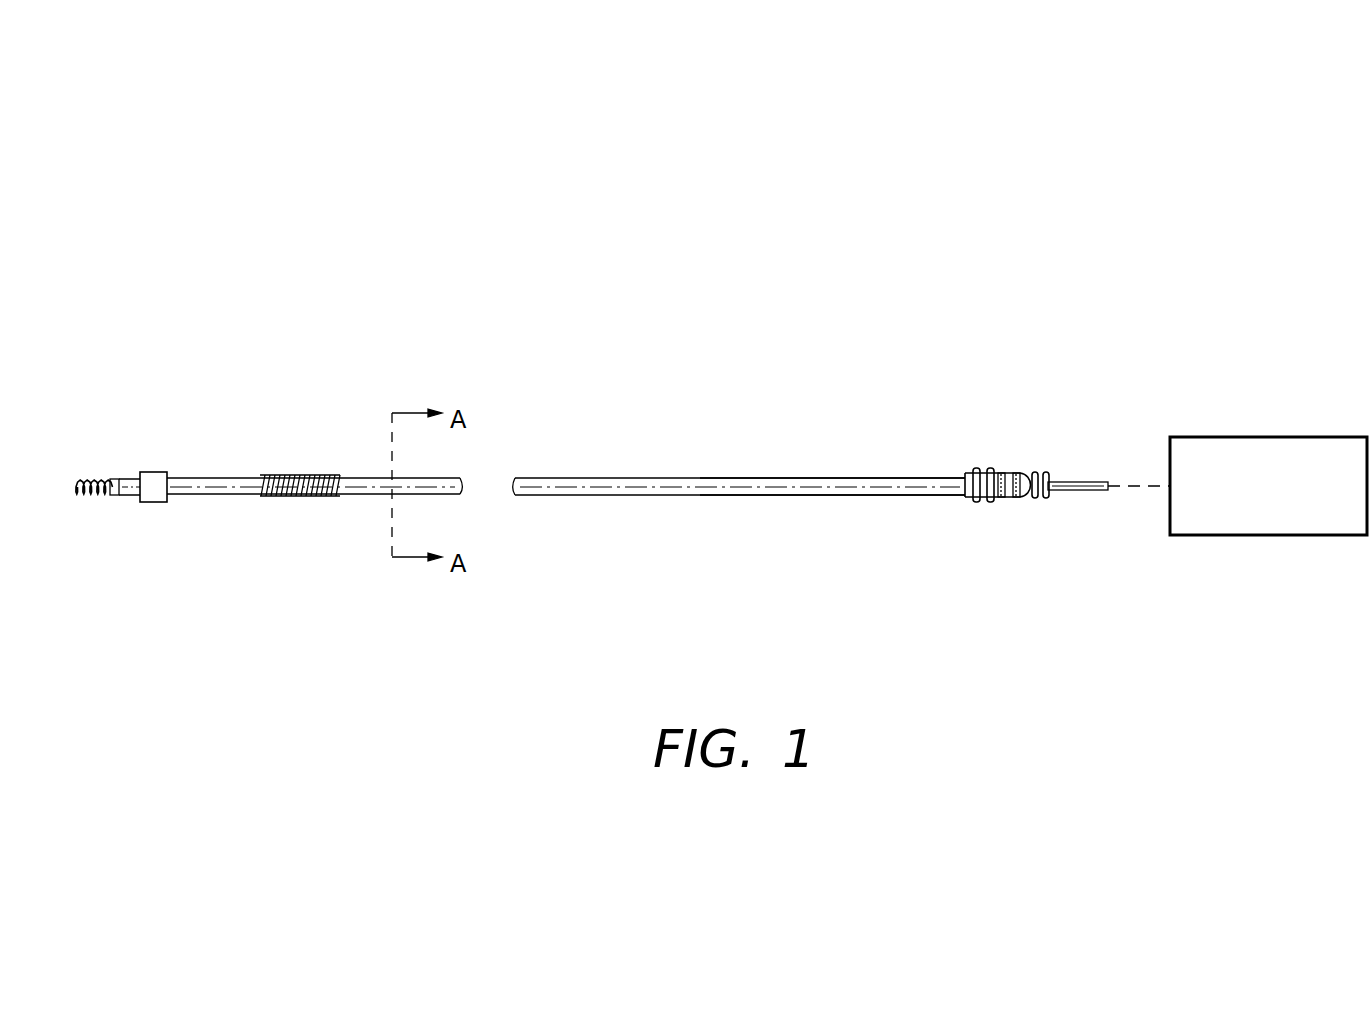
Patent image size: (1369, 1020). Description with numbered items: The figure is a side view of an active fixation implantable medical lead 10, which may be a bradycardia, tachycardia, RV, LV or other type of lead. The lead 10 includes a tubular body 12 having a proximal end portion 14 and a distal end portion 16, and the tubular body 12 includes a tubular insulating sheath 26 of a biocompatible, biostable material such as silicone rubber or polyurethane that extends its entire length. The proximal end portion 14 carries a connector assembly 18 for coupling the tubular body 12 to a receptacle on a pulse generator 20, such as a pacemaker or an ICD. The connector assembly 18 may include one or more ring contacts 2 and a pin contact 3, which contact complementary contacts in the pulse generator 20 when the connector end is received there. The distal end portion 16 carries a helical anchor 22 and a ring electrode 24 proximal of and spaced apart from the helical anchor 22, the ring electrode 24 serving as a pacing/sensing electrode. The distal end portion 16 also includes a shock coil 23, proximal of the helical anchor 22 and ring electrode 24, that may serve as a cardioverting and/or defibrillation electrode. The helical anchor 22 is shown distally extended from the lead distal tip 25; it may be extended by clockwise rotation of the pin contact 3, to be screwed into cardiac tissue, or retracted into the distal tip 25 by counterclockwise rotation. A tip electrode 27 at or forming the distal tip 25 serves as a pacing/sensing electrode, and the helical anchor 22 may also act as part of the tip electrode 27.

The active fixation implantable medical lead 10 is at (617, 228).
The tubular body 12 is at (673, 446).
The proximal end portion 14 is at (925, 475).
The distal end portion 16 is at (215, 478).
The connector assembly 18 is at (1010, 475).
The ring contacts 2 is at (1001, 498).
The pin contact 3 is at (1075, 491).
The pulse generator 20 is at (1230, 437).
The helical anchor 22 is at (95, 480).
The shock coil 23 is at (286, 496).
The ring electrode 24 is at (157, 472).
The lead distal tip 25 is at (112, 497).
The tubular insulating sheath 26 is at (597, 478).
The tip electrode 27 is at (118, 478).